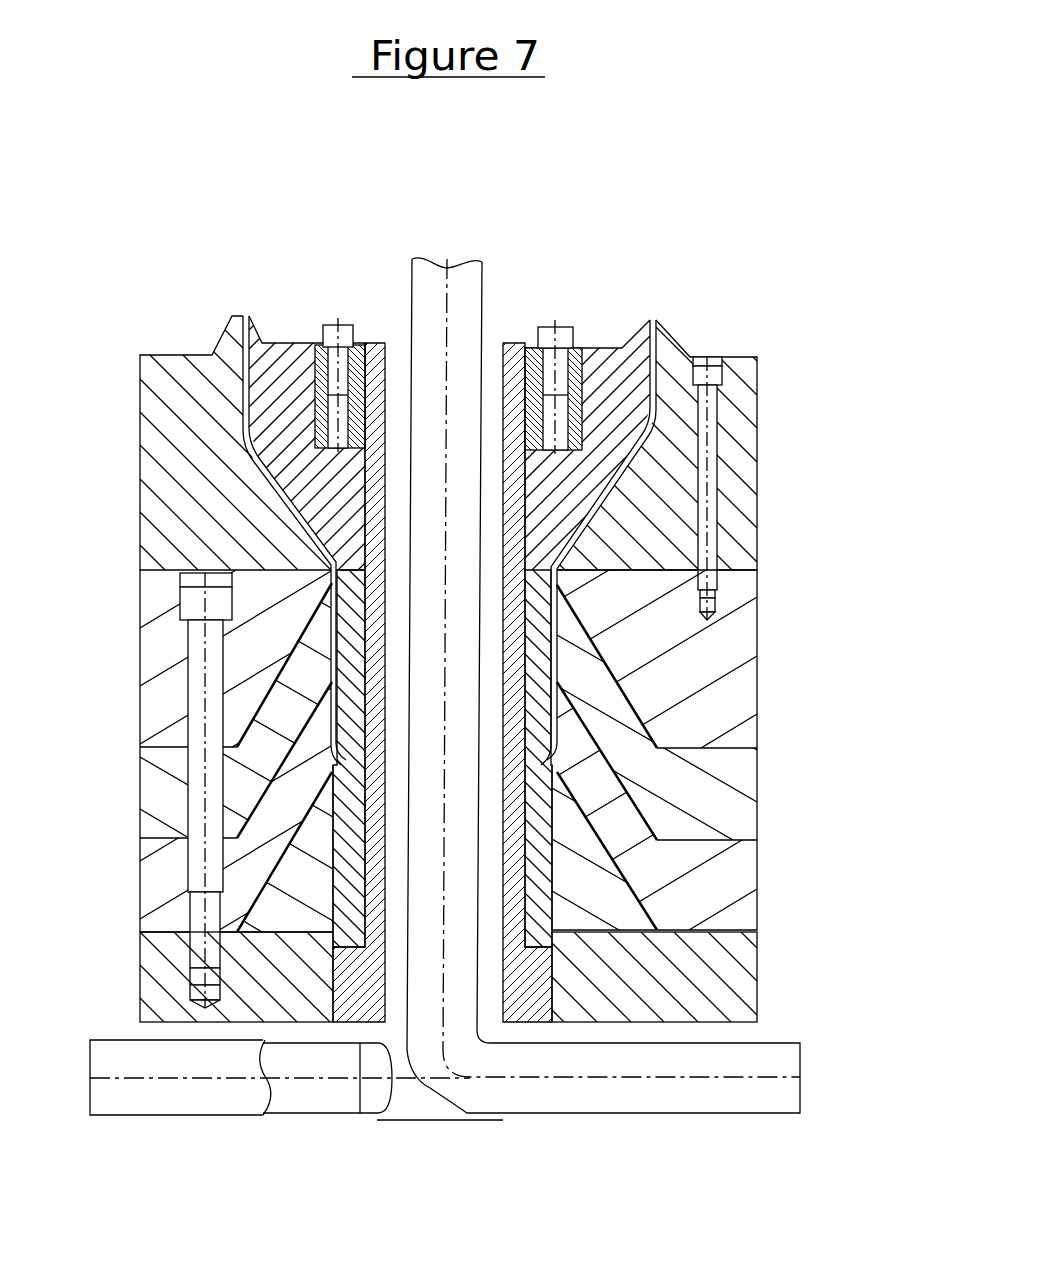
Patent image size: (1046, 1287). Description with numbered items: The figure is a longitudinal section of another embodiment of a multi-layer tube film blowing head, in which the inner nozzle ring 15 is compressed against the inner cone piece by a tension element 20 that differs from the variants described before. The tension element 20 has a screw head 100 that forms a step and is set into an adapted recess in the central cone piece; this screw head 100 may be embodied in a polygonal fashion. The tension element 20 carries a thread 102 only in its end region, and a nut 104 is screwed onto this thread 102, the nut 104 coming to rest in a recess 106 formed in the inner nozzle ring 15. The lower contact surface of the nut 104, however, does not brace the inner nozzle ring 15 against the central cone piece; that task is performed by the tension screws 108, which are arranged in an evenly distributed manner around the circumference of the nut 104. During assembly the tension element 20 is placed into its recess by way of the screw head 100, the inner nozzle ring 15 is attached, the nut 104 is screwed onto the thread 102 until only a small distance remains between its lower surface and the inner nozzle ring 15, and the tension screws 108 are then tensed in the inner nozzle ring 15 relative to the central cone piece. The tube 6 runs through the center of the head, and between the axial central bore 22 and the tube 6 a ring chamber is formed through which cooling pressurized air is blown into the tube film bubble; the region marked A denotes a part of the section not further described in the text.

The tube 6 is at (470, 287).
The inner nozzle ring 15 is at (625, 381).
The tension element 20 is at (525, 748).
The axial central bore 22 is at (396, 850).
The screw head 100 is at (538, 948).
The thread 102 is at (366, 343).
The nut 104 is at (672, 319).
The recess 106 is at (320, 325).
The tension screws 108 is at (574, 327).
The clamping segment A is at (560, 848).